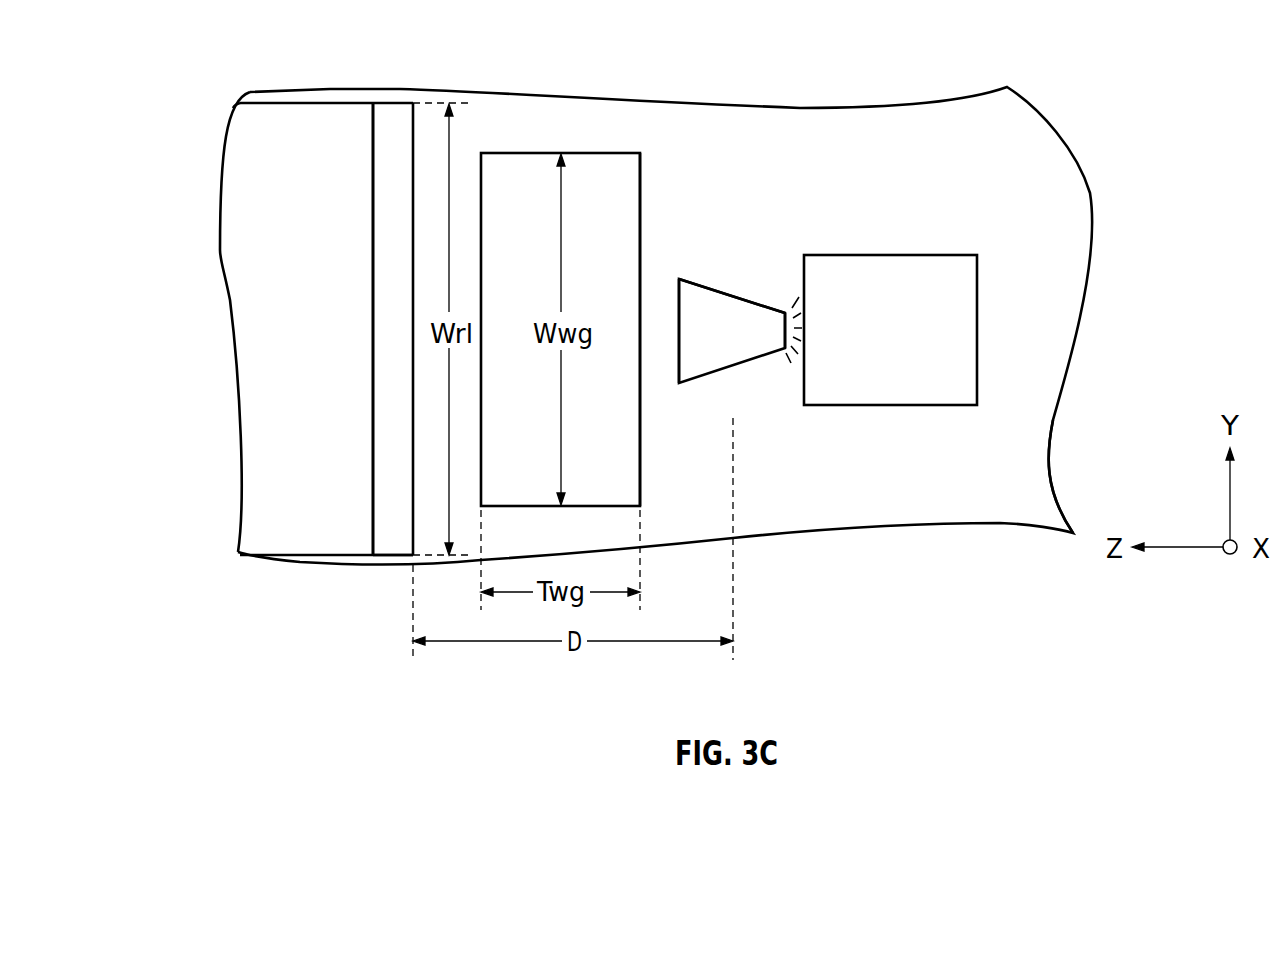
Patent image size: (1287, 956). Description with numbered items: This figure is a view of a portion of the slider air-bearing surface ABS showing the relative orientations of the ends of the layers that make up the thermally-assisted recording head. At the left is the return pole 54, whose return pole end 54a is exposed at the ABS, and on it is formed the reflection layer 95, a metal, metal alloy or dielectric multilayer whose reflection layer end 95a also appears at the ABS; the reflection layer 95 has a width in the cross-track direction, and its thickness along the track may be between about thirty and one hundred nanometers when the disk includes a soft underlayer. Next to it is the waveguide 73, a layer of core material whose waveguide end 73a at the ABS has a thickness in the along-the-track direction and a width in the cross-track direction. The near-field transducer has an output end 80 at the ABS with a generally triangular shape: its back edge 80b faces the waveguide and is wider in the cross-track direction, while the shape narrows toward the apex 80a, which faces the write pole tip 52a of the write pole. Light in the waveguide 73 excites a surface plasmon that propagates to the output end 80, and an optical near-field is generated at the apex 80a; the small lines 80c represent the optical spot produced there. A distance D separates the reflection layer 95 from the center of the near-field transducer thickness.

The return pole 54 is at (286, 103).
The return pole end 54a is at (238, 253).
The reflection layer 95 is at (393, 103).
The reflection layer end 95a is at (393, 545).
The waveguide 73 is at (531, 152).
The waveguide end 73a is at (626, 189).
The NFT output end 80 is at (683, 280).
The apex 80a is at (781, 326).
The back edge 80b is at (683, 317).
The small lines 80c is at (792, 302).
The write pole tip 52a is at (907, 282).
The air-bearing surface ABS is at (1032, 490).